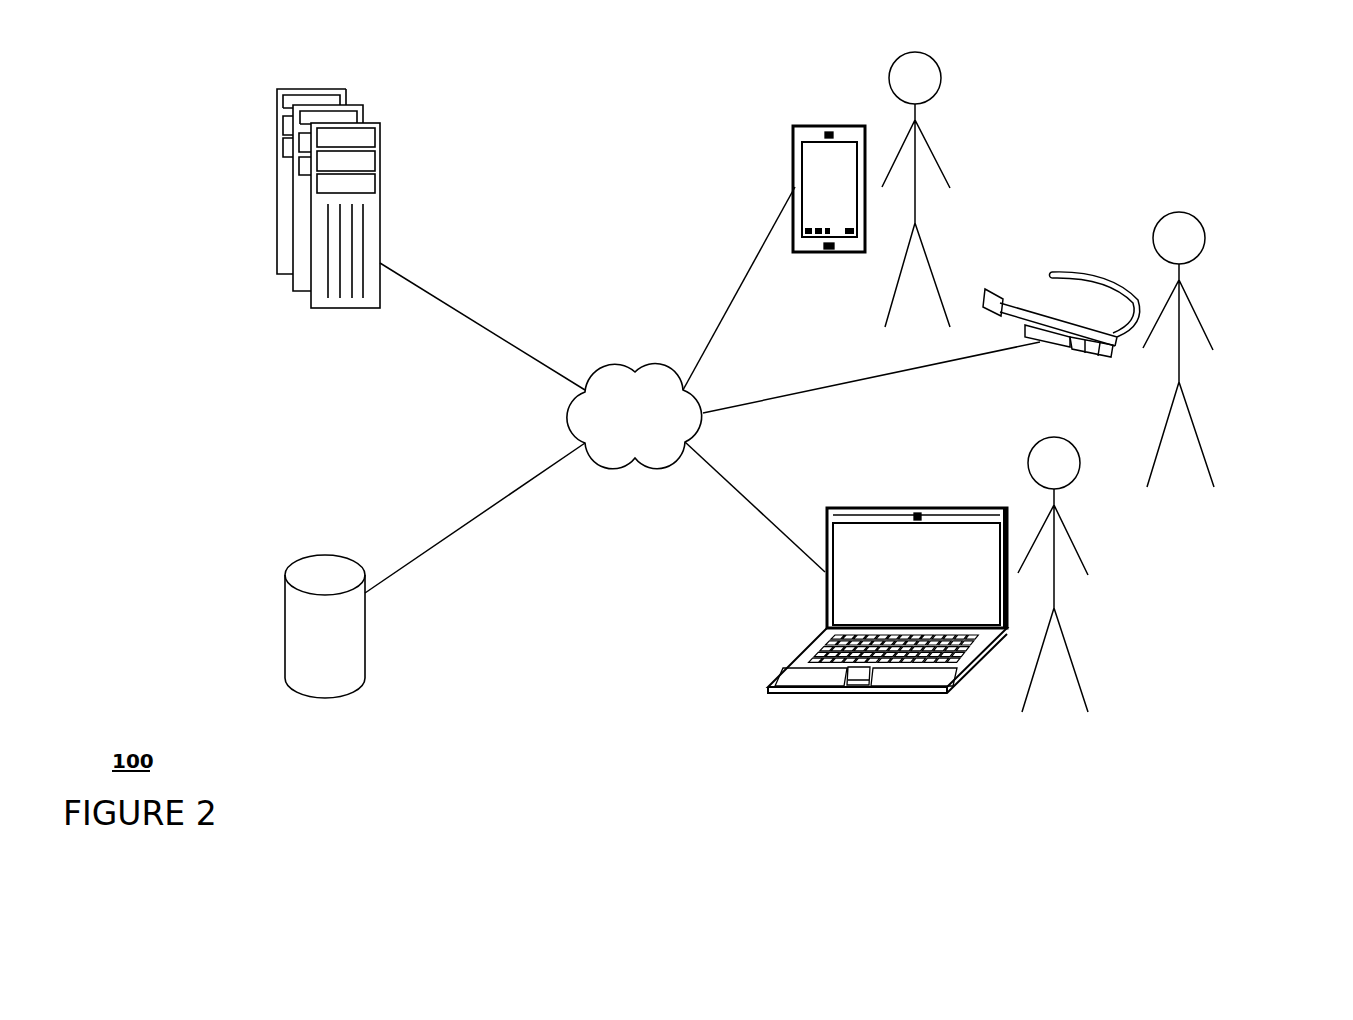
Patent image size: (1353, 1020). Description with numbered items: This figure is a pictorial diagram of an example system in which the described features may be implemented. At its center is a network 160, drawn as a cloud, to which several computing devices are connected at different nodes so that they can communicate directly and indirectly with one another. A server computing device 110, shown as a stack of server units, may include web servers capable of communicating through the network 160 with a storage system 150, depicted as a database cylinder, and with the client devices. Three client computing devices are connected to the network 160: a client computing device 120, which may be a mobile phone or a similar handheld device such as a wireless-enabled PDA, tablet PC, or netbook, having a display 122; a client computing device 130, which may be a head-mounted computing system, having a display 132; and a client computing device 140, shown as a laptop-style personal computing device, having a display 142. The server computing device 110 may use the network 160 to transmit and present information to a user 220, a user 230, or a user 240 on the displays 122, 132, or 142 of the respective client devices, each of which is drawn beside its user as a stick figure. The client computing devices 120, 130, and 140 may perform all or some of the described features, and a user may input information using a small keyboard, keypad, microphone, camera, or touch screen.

The server computing device 110 is at (380, 163).
The client computing device 120 is at (793, 158).
The display 122 is at (797, 185).
The client computing device 130 is at (1080, 268).
The display 132 is at (1103, 353).
The client computing device 140 is at (825, 577).
The display 142 is at (825, 615).
The storage system 150 is at (367, 645).
The network 160 is at (634, 416).
The user 220 is at (945, 177).
The user 230 is at (1210, 335).
The user 240 is at (1083, 562).